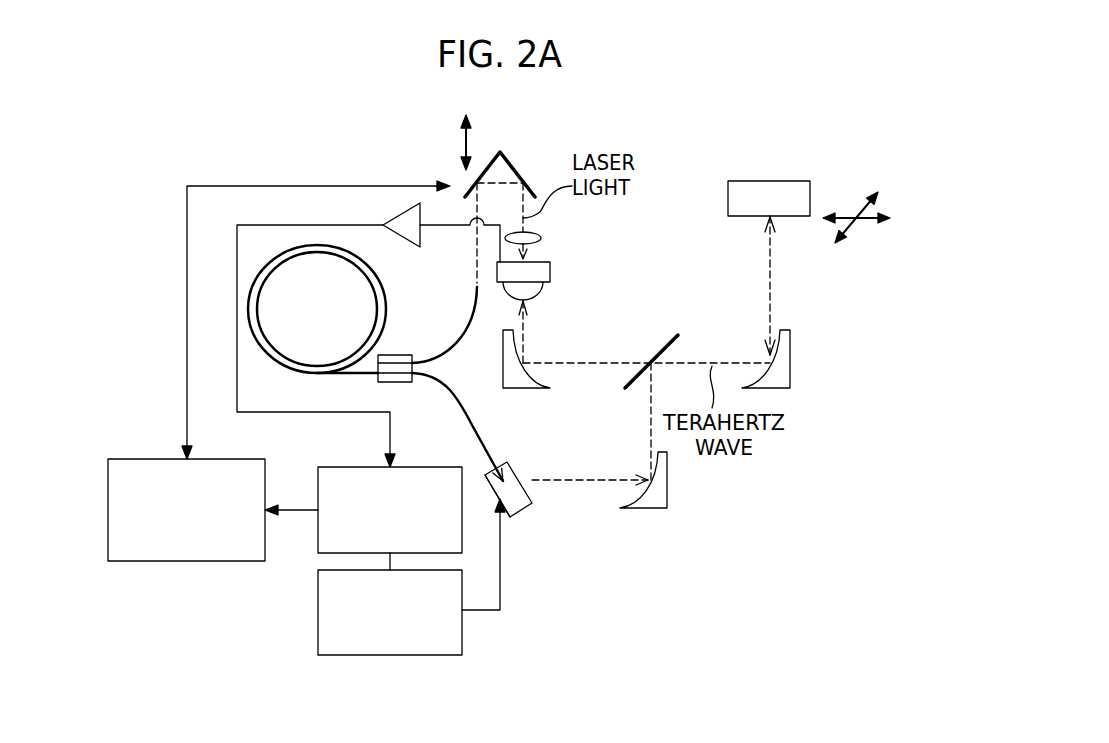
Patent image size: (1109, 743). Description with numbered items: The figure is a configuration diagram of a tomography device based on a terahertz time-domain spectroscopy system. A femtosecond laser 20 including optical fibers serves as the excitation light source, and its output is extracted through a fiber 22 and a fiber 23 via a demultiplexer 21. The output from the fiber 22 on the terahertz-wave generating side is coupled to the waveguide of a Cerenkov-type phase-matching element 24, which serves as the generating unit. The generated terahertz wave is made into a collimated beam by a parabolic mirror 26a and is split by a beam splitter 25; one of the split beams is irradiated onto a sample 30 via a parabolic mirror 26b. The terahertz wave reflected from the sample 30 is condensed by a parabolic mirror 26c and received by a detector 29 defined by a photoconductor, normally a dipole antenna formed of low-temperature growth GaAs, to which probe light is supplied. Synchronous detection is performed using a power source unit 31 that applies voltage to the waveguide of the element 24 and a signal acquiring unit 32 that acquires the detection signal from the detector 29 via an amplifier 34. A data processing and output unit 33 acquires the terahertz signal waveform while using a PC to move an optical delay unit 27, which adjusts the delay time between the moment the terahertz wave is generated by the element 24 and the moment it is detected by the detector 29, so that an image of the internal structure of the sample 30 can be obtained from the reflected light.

The femtosecond laser 20 is at (313, 245).
The demultiplexer 21 is at (392, 356).
The fiber 22 is at (490, 443).
The fiber 23 is at (474, 318).
The Cerenkov-type phase-matching element 24 is at (518, 507).
The beam splitter 25 is at (650, 355).
The parabolic mirror 26a is at (667, 490).
The parabolic mirror 26b is at (790, 358).
The parabolic mirror 26c is at (524, 388).
The optical delay unit 27 is at (510, 165).
The detector 29 is at (540, 275).
The sample 30 is at (770, 192).
The power source unit 31 is at (412, 655).
The signal acquiring unit 32 is at (415, 467).
The data processing and output unit 33 is at (232, 459).
The amplifier 34 is at (408, 218).